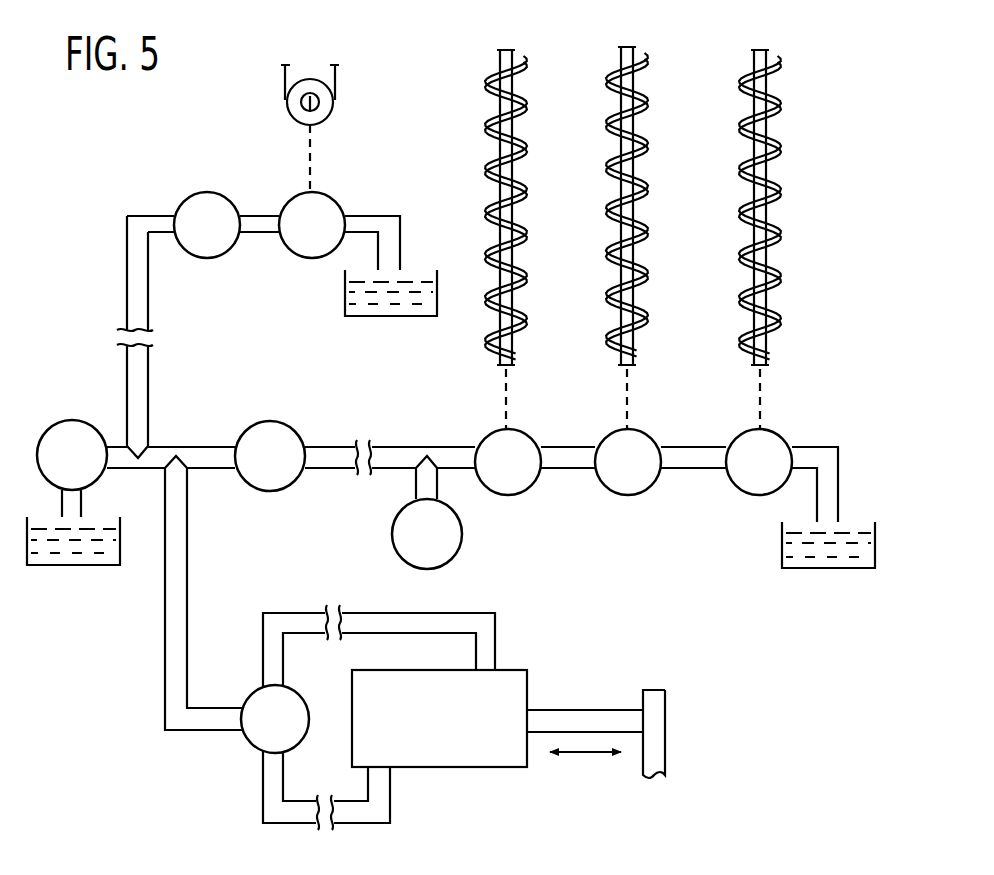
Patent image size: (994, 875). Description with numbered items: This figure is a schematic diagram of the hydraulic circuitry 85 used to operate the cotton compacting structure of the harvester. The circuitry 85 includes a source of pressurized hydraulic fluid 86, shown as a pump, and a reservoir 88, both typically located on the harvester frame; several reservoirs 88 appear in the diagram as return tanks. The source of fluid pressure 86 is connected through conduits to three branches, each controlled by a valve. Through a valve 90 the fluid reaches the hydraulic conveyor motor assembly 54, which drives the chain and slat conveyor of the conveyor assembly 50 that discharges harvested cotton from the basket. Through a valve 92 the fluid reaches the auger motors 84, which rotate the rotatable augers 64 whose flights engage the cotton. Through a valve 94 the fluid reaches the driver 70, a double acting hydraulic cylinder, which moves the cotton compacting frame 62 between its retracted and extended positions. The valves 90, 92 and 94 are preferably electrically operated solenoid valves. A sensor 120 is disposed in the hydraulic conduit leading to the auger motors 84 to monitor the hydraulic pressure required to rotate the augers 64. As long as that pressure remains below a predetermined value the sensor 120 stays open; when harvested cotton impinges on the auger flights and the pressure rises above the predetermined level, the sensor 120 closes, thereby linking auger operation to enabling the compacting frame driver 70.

The conveyor assembly 50 is at (334, 110).
The hydraulic conveyor motor assembly 54 is at (300, 192).
The cotton compacting frame 62 is at (666, 731).
The rotatable augers 64 is at (540, 157).
The driver 70 is at (452, 770).
The auger motors 84 is at (496, 432).
The hydraulic circuitry 85 is at (188, 772).
The source of pressurized hydraulic fluid 86 is at (72, 420).
The reservoir 88 is at (383, 312).
The valve 90 is at (197, 192).
The valve 92 is at (248, 424).
The valve 94 is at (247, 694).
The sensor 120 is at (392, 538).